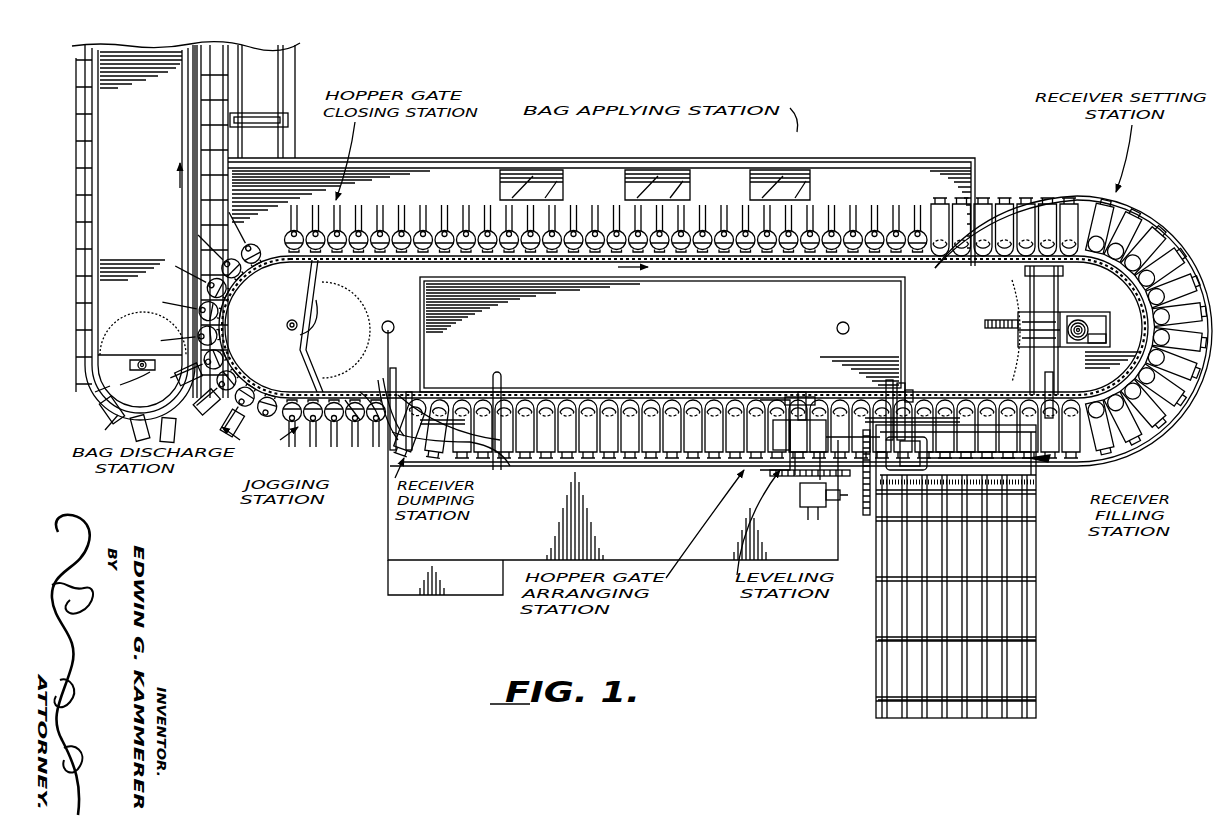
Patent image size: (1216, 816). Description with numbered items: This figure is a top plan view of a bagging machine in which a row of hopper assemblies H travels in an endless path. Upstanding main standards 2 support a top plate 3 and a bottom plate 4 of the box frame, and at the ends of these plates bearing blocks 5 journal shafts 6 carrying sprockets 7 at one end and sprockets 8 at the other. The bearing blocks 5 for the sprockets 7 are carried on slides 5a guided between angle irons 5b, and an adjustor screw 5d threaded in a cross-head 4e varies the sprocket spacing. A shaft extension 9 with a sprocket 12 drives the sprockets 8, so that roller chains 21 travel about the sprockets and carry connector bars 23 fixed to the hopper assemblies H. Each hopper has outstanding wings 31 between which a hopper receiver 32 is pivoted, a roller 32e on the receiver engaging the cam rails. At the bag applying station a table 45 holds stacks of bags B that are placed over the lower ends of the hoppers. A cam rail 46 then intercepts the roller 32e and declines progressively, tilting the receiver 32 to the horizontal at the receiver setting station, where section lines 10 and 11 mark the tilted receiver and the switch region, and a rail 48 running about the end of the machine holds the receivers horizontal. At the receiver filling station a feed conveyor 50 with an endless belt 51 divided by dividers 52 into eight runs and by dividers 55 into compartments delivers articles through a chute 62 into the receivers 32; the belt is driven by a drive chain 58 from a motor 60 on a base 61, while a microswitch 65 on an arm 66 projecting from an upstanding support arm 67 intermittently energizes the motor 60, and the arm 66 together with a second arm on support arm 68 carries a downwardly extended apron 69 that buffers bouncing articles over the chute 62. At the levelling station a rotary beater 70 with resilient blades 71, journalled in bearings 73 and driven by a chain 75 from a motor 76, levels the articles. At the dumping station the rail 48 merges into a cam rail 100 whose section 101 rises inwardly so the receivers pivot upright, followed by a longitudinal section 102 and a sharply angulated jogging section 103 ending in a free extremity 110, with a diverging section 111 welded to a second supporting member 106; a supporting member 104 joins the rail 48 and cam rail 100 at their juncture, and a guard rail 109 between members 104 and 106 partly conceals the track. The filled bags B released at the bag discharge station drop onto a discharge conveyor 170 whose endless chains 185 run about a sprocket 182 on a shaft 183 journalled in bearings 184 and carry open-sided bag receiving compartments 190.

The discharge conveyor 170 is at (122, 181).
The endless chains 185 is at (104, 241).
The sprocket 182 is at (157, 322).
The bearings 184 is at (136, 381).
The shaft 183 is at (95, 392).
The bag receiving compartments 190 is at (104, 419).
The table or platform 45 is at (848, 166).
The bag B is at (532, 172).
The connector bar 23 is at (529, 266).
The main standards 2 is at (388, 320).
The wings 31 is at (381, 230).
The hopper assembly H is at (430, 228).
The roller 32e is at (912, 230).
The hopper receiver 32 is at (600, 230).
The cam rail 46 is at (988, 210).
The rail 48 is at (1194, 248).
The roller chains 21 is at (302, 362).
The sprockets 8 is at (266, 279).
The sprockets 7 is at (1103, 284).
The shafts 6 is at (285, 327).
The bearing blocks 5 is at (300, 343).
The slides 5a is at (1100, 339).
The angle irons 5b is at (1058, 312).
The adjustor screw 5d is at (1014, 316).
The cross-head 4e is at (986, 322).
The support arm 68 is at (1054, 392).
The horizontally extended arm 66 is at (1075, 398).
The upstanding support arm 67 is at (892, 380).
The microswitch 65 is at (903, 385).
The apron 69 is at (915, 396).
The brush-like arms or blades 71 is at (776, 420).
The rotary beater 70 is at (784, 426).
The bearings 73 is at (803, 392).
The base 61 is at (835, 450).
The chain 75 is at (796, 479).
The motor 76 is at (804, 498).
The drive chain 58 is at (866, 515).
The feed conveyor 50 is at (1042, 607).
The endless belt 51 is at (1020, 560).
The dividers 52 is at (1012, 685).
The dividers 55 is at (896, 658).
The motor 60 is at (953, 453).
The chute 62 is at (975, 445).
The supporting member 104 is at (503, 376).
The cam track section 102 is at (398, 395).
The cam track section 111 is at (412, 395).
The cam rail 100 is at (448, 398).
The cam track section 101 is at (462, 447).
The second supporting member 106 is at (398, 380).
The guard rail 109 is at (455, 438).
The free extremity 110 is at (378, 392).
The jogging cam track section 103 is at (388, 432).
The top plate 3 is at (655, 155).
The bottom plate 4 is at (791, 155).
The shaft extension 9 is at (954, 128).
The section line 10 is at (1083, 178).
The section line 11 is at (967, 387).
The sprocket 12 is at (330, 515).